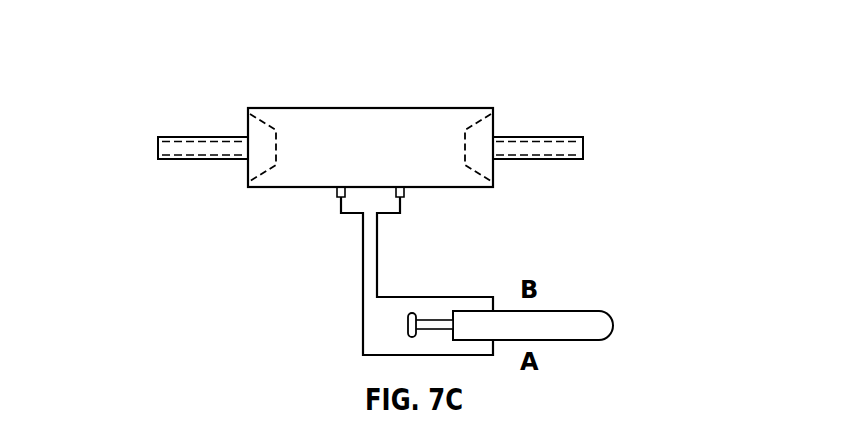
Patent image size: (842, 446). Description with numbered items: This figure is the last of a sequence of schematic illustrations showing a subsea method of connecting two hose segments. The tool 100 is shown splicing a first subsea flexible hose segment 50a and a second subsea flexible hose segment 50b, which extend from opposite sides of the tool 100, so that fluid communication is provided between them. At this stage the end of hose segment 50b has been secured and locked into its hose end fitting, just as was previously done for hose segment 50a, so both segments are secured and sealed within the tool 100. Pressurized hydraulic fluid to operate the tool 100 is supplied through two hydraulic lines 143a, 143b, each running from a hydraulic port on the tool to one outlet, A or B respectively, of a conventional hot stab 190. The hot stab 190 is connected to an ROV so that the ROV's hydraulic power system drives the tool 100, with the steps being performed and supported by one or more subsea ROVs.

The tool 100 is at (343, 107).
The first subsea flexible hose segment 50a is at (207, 135).
The second subsea flexible hose segment 50b is at (537, 133).
The hydraulic line 143a is at (362, 286).
The hydraulic line 143b is at (378, 218).
The hot stab 190 is at (613, 325).